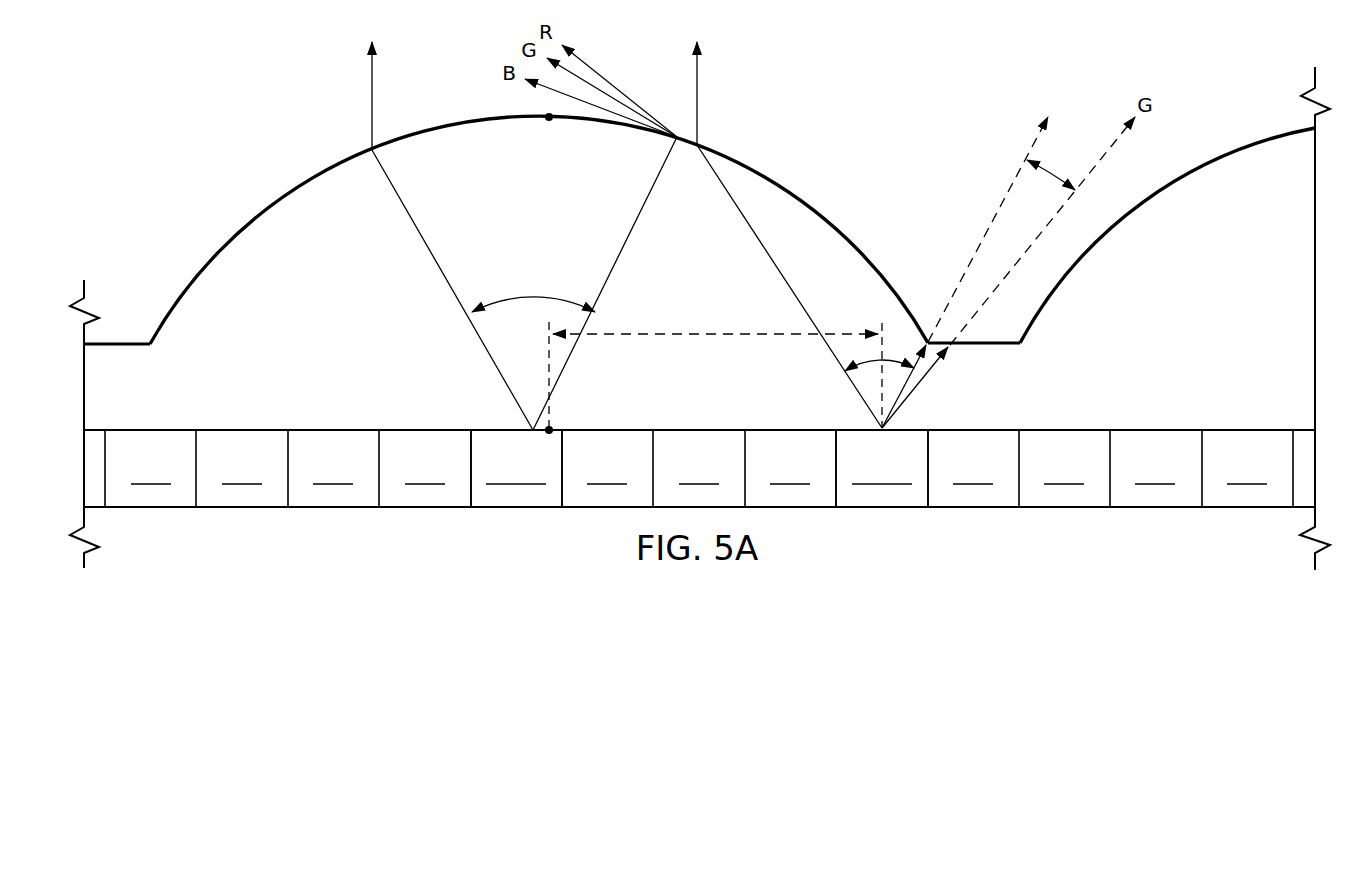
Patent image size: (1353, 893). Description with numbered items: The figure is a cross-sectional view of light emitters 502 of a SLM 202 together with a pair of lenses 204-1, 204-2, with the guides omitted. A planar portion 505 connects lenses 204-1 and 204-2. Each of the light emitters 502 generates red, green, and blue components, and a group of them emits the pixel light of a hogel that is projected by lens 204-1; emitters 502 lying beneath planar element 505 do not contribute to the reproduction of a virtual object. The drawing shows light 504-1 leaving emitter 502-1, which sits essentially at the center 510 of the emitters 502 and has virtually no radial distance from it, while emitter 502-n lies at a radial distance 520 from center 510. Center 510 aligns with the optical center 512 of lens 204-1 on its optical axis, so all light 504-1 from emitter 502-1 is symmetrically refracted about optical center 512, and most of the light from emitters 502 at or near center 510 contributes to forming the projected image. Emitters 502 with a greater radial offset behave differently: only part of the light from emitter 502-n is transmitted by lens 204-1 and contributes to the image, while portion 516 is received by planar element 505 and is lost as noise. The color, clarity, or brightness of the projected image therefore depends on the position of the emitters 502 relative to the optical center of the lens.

The SLM 202 is at (512, 510).
The light emitters 502 is at (699, 468).
The emitter 502-1 is at (516, 468).
The emitter 502-n is at (882, 468).
The lens 204-1 is at (257, 217).
The lens 204-2 is at (1145, 205).
The planar portion 505 is at (985, 345).
The light 504-1 is at (530, 298).
The center 510 is at (555, 427).
The optical center 512 is at (548, 123).
The portion 516 is at (1056, 172).
The radial distance 520 is at (702, 332).